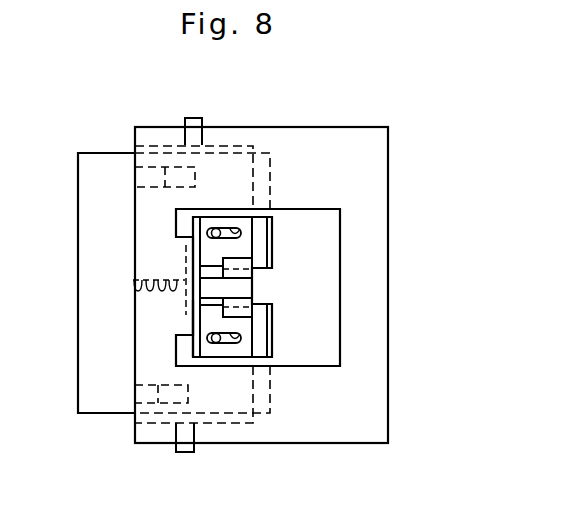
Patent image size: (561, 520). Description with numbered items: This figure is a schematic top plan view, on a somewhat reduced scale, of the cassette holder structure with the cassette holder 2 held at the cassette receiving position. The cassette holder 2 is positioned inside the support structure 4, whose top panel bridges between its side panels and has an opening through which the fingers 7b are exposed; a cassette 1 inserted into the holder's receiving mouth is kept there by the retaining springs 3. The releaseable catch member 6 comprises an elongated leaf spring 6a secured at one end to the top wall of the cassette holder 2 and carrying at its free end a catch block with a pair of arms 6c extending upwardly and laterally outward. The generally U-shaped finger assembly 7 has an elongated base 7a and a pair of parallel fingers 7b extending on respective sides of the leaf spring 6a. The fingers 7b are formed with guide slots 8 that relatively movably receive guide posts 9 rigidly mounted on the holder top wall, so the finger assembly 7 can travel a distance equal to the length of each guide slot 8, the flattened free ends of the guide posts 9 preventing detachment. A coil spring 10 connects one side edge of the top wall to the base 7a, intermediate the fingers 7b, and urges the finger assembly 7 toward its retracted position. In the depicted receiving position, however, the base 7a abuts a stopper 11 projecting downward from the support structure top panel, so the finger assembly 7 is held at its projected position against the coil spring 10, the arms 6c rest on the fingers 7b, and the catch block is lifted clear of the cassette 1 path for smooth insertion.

The cassette 1 is at (87, 297).
The cassette holder 2 is at (142, 348).
The retaining springs 3 is at (178, 176).
The support structure 4 is at (375, 170).
The releaseable catch member 6 is at (243, 285).
The leaf spring 6a is at (208, 287).
The arms 6c is at (235, 314).
The finger assembly 7 is at (238, 250).
The base 7a is at (197, 313).
The fingers 7b is at (210, 247).
The guide slots 8 is at (236, 230).
The guide posts 9 is at (217, 228).
The coil spring 10 is at (153, 278).
The stopper 11 is at (186, 245).